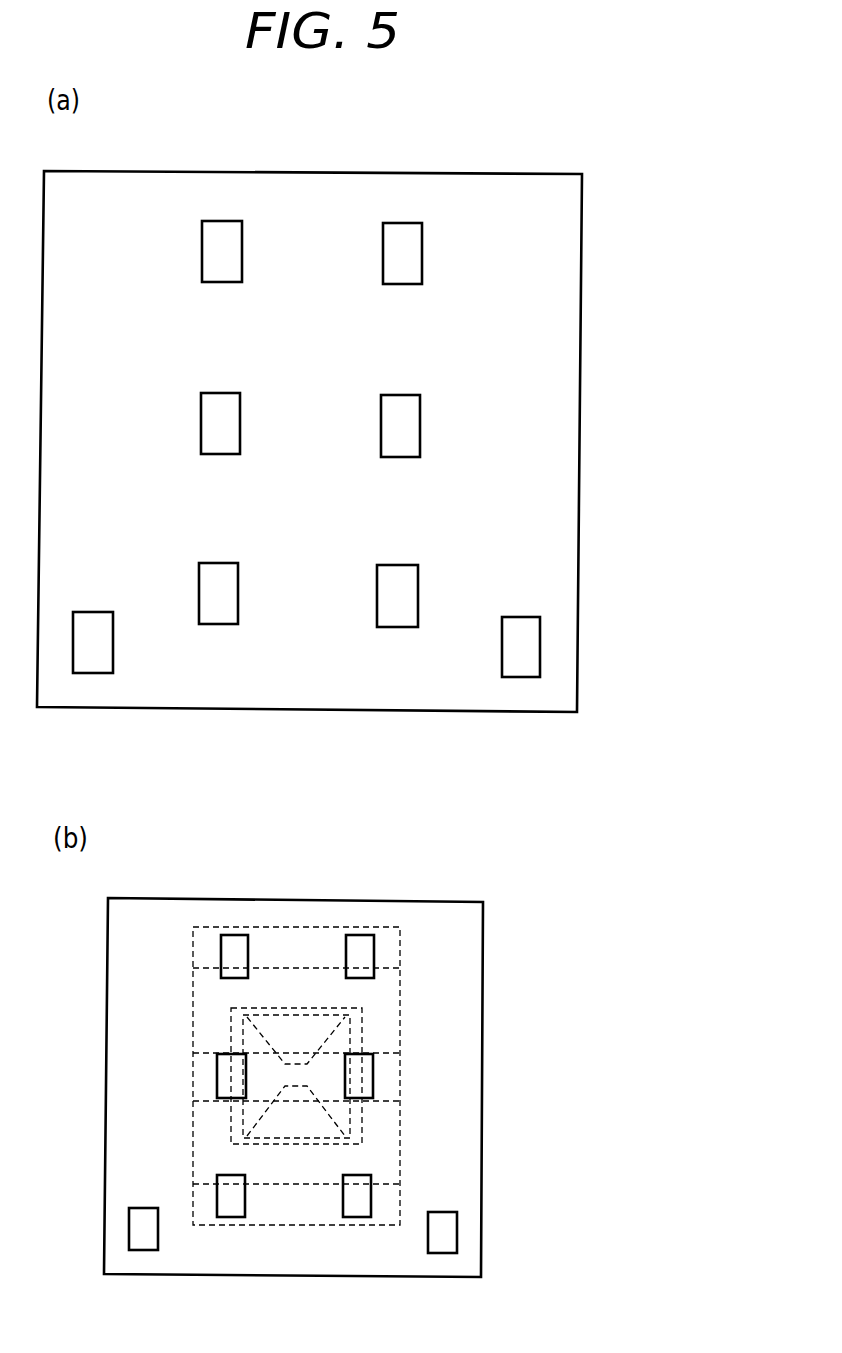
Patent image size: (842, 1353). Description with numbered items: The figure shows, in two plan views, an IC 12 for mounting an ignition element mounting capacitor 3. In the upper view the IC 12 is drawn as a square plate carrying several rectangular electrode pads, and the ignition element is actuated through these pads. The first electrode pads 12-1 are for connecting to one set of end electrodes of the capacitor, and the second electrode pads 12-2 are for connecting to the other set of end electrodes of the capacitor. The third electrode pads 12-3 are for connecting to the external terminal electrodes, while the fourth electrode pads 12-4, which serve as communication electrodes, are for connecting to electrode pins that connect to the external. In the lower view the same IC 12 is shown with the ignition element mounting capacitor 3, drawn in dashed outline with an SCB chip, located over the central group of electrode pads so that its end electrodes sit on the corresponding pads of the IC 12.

The IC 12 is at (584, 291).
The first electrode pads 12-1 is at (400, 240).
The second electrode pads 12-2 is at (405, 590).
The third electrode pads 12-3 is at (407, 428).
The fourth electrode pads (communication electrodes) 12-4 is at (528, 652).
The ignition element mounting capacitor 3 is at (325, 926).